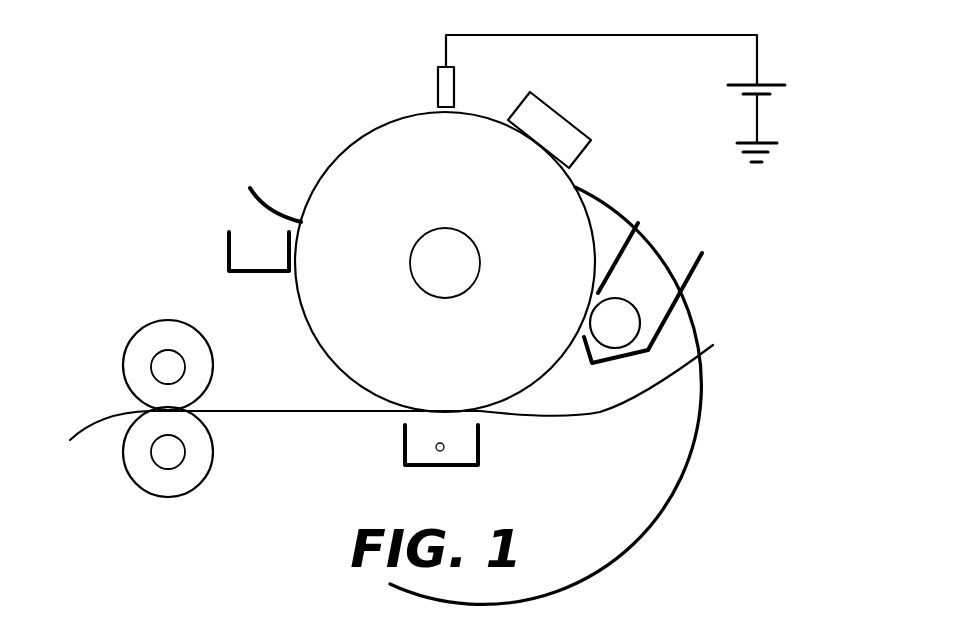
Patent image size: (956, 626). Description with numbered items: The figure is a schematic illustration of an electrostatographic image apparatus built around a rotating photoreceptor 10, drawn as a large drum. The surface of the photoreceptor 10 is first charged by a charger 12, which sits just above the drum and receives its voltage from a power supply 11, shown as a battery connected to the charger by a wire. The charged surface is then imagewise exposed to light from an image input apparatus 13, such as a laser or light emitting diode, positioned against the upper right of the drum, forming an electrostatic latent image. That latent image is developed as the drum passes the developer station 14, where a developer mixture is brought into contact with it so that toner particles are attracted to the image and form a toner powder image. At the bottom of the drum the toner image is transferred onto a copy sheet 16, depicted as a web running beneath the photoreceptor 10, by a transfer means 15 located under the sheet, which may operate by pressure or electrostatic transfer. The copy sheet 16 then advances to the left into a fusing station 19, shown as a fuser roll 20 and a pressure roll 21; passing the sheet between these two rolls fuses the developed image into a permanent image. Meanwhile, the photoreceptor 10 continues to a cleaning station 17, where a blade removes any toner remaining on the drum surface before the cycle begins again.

The photoreceptor 10 is at (580, 193).
The power supply 11 is at (756, 60).
The charger 12 is at (436, 86).
The image input apparatus 13 is at (563, 112).
The developer station 14 is at (665, 250).
The transfer means 15 is at (482, 443).
The copy sheet 16 is at (653, 385).
The cleaning station 17 is at (247, 227).
The fusing station 19 is at (163, 387).
The fuser roll 20 is at (214, 367).
The pressure roll 21 is at (214, 450).